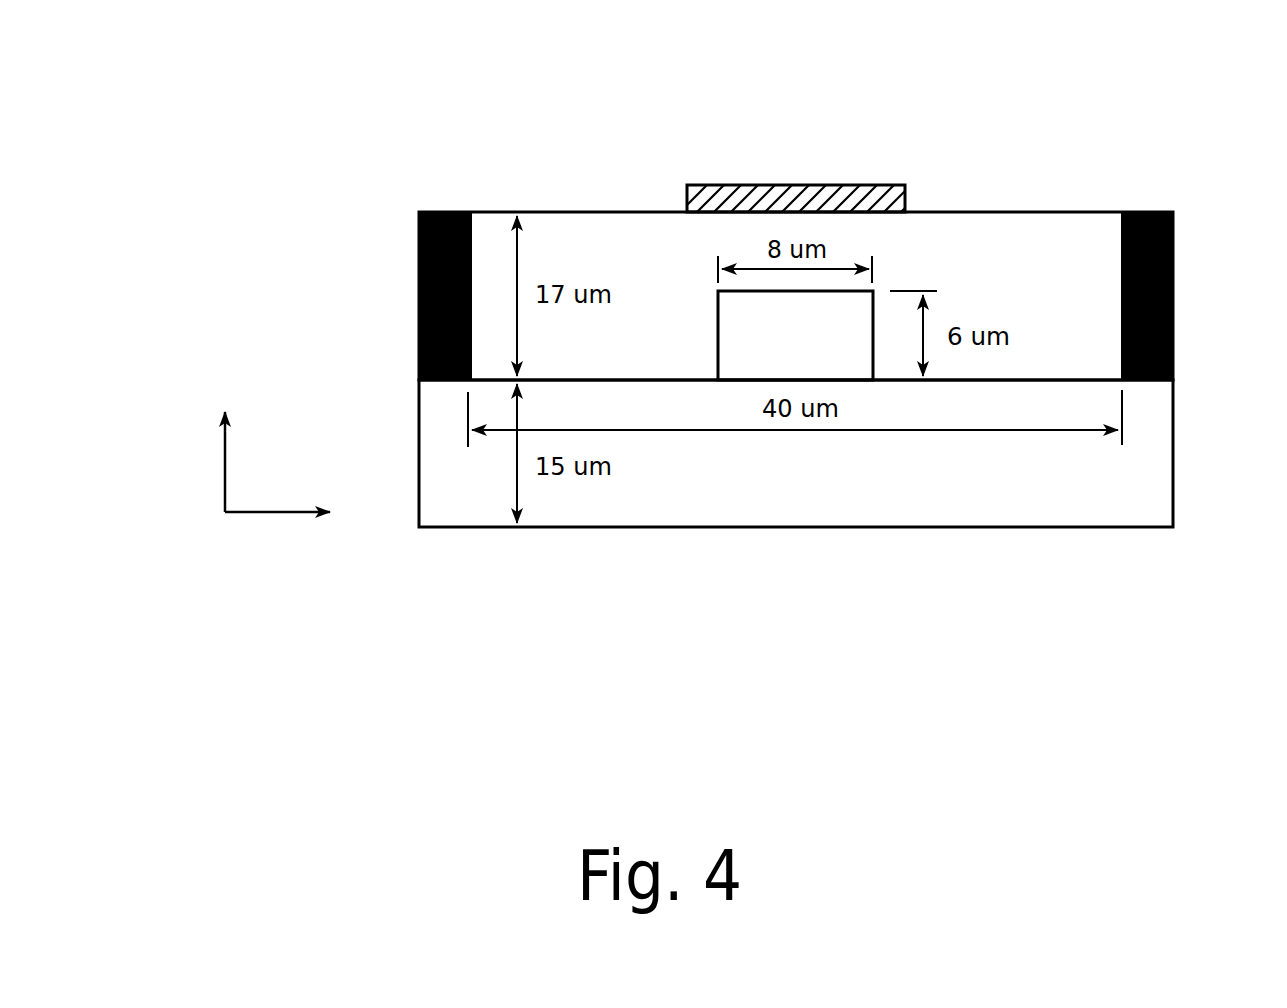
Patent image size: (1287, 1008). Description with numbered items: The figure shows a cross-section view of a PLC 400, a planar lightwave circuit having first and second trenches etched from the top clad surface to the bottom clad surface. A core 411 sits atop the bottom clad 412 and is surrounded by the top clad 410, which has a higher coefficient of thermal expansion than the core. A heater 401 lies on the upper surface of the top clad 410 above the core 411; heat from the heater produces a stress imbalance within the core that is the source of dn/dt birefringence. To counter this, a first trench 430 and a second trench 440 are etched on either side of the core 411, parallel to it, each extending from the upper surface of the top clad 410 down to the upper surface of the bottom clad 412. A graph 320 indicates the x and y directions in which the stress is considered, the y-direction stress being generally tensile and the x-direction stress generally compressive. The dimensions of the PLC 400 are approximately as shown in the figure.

The PLC 400 is at (828, 73).
The heater 401 is at (767, 180).
The top clad 410 is at (1021, 206).
The core 411 is at (712, 357).
The bottom clad 412 is at (1178, 487).
The first trench 430 is at (414, 288).
The second trench 440 is at (1178, 288).
The graph 320 is at (270, 480).